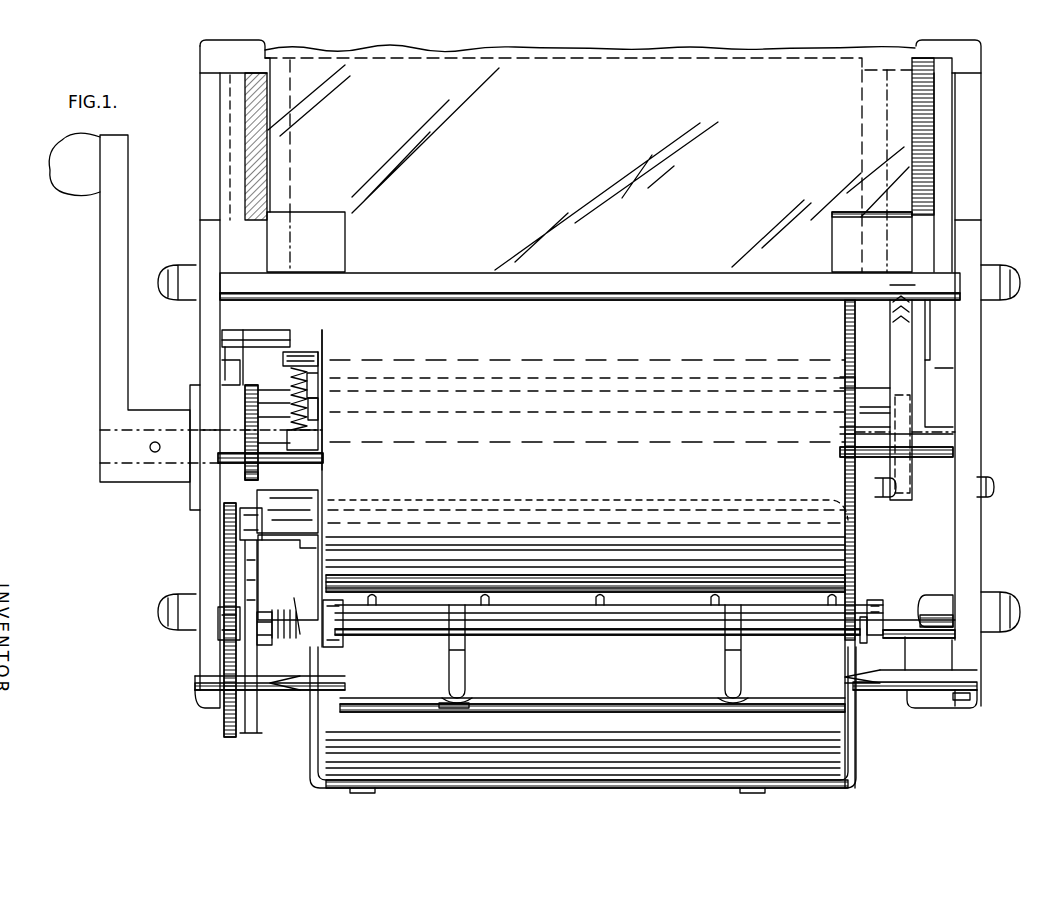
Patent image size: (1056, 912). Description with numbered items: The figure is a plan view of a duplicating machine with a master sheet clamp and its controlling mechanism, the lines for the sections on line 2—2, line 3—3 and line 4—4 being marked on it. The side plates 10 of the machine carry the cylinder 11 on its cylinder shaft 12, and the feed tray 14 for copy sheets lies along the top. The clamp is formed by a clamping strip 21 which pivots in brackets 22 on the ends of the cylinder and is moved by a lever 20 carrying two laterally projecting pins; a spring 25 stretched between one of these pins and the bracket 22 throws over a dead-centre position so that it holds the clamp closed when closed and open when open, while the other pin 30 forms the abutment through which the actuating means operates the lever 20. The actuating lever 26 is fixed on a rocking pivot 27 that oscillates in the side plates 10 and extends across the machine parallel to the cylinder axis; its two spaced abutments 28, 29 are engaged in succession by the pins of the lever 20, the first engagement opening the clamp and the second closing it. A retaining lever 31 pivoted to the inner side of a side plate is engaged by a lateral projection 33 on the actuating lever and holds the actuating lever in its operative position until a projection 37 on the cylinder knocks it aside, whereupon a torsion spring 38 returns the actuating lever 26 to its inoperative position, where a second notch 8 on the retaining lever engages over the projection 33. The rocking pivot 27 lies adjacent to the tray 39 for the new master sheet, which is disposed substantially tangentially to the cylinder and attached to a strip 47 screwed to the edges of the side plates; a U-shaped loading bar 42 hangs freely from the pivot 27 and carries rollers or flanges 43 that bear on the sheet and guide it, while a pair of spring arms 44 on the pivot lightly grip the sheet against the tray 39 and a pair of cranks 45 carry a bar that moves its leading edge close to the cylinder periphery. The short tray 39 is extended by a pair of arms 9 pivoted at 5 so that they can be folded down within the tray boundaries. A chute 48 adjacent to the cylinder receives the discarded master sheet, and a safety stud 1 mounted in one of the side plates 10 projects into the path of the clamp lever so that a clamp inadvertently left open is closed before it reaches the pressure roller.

The safety stud 1 is at (250, 338).
The section line 2— 2 is at (176, 360).
The section line 3— 3 is at (312, 150).
The section line 4— 4 is at (400, 135).
The pivot 5 is at (452, 710).
The second notch 8 is at (902, 281).
The arms 9 is at (468, 700).
The side plates 10 is at (212, 252).
The cylinder 11 is at (468, 292).
The cylinder shaft 12 is at (300, 462).
The feed tray 14 is at (572, 200).
The lever 20 is at (324, 366).
The clamping strip 21 is at (403, 385).
The brackets 22 is at (320, 410).
The spring 25 is at (291, 385).
The actuating lever 26 is at (250, 647).
The pivot 27 is at (300, 642).
The abutment 28 is at (296, 508).
The abutment 29 is at (276, 550).
The pin 30 is at (308, 352).
The retaining lever 31 is at (236, 524).
The lateral projection 33 is at (246, 552).
The projection 37 is at (256, 418).
The torsion spring 38 is at (290, 618).
The tray 39 is at (590, 704).
The loading bar 42 is at (420, 618).
The rollers or flanges 43 is at (600, 605).
The spring arms 44 is at (464, 664).
The cranks 45 is at (343, 648).
The strip 47 is at (340, 690).
The chute 48 is at (616, 782).